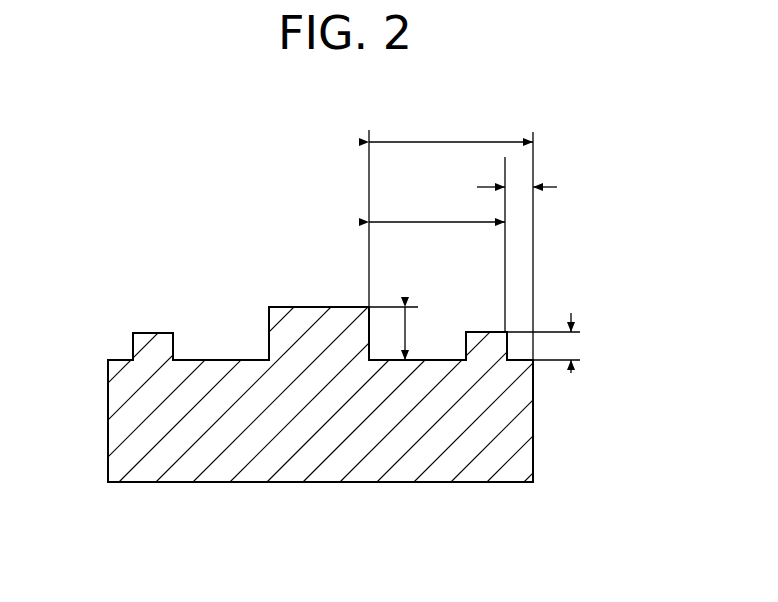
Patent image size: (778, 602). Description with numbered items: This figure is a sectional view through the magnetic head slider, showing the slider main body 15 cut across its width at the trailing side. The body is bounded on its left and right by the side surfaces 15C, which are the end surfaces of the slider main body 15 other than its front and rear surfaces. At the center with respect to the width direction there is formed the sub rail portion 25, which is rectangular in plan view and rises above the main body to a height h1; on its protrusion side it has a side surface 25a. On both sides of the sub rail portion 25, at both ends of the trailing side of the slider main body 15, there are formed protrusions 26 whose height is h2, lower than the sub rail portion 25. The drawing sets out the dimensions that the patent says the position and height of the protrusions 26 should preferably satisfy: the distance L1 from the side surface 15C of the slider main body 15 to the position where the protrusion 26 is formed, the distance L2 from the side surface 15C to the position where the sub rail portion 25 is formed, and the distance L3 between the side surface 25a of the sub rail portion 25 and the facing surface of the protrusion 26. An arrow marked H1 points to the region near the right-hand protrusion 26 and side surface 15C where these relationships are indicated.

The slider main body 15 is at (260, 433).
The side surfaces 15C is at (108, 433).
The sub rail portion 25 is at (317, 315).
The side surface of the sub rail portion 25a is at (372, 332).
The protrusions 26 is at (152, 338).
The distance from side surface to protrusion L1 is at (517, 171).
The distance from side surface to sub rail portion L2 is at (451, 129).
The distance between sub rail portion and protrusion L3 is at (437, 209).
The height of the sub rail portion h1 is at (419, 333).
The height of the protrusions h2 is at (587, 343).
The region H1 is at (557, 272).